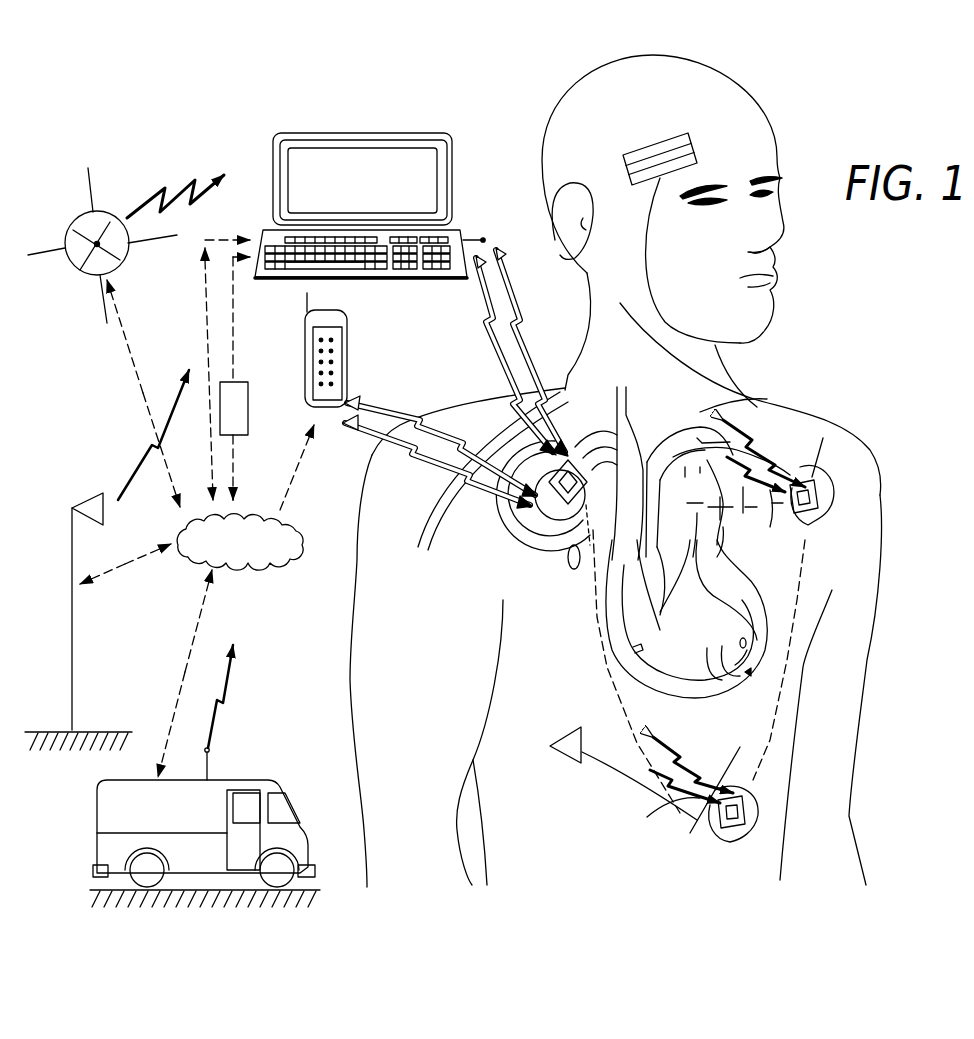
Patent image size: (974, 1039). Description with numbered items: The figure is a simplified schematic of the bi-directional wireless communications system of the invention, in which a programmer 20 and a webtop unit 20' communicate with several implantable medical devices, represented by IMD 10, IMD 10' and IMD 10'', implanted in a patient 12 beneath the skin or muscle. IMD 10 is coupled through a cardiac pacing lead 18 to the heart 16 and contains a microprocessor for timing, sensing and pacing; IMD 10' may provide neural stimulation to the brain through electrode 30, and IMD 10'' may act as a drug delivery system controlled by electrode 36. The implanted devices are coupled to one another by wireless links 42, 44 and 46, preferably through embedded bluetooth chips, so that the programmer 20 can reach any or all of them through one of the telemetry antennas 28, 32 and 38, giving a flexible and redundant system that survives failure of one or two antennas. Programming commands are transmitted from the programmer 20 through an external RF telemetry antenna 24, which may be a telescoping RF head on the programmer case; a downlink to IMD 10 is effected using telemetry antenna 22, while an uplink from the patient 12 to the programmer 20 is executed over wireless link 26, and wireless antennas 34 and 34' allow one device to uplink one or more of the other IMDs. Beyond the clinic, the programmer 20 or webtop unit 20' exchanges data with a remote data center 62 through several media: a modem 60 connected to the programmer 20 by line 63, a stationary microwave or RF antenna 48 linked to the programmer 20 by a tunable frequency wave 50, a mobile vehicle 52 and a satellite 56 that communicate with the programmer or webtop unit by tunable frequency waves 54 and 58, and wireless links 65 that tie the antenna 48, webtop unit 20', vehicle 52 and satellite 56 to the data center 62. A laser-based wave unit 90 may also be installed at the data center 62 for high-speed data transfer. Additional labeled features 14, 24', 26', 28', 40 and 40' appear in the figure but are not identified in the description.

The implantable medical device 10 is at (530, 511).
The implantable medical device 10' is at (741, 809).
The implantable medical device 10'' is at (834, 486).
The patient 12 is at (843, 440).
The lead/electrode of device 14 is at (577, 563).
The heart 16 is at (717, 693).
The cardiac pacing lead 18 is at (667, 690).
The programmer 20 is at (361, 179).
The webtop unit 20' is at (359, 358).
The telemetry antenna 22 is at (467, 364).
The external RF telemetry antenna 24 is at (495, 214).
The handheld antenna 24' is at (283, 300).
The wireless link 26 is at (522, 352).
The telemetry link to handheld 26' is at (441, 438).
The telemetry antenna 28 is at (587, 424).
The return telemetry link 28' is at (437, 464).
The electrode 30 is at (636, 140).
The telemetry antenna 32 is at (823, 467).
The wireless antenna 34 is at (735, 522).
The wireless antenna 34' is at (772, 438).
The electrode 36 is at (573, 755).
The telemetry antenna 38 is at (745, 765).
The telemetry link to device 10' 40 is at (657, 794).
The lead 40' is at (698, 860).
The wireless link 42 is at (779, 660).
The wireless link 44 is at (810, 575).
The wireless link 46 is at (609, 689).
The stationary microwave and/or RF antenna 48 is at (72, 647).
The tunable frequency wave 50 is at (173, 413).
The mobile vehicle 52 is at (97, 820).
The tunable frequency waves 54 is at (213, 733).
The satellite 56 is at (77, 222).
The tunable frequency waves 58 is at (143, 205).
The modem 60 is at (248, 397).
The data center 62 is at (300, 553).
The line 63 is at (237, 322).
The wireless link 65 is at (207, 333).
The wave unit 90 is at (233, 475).